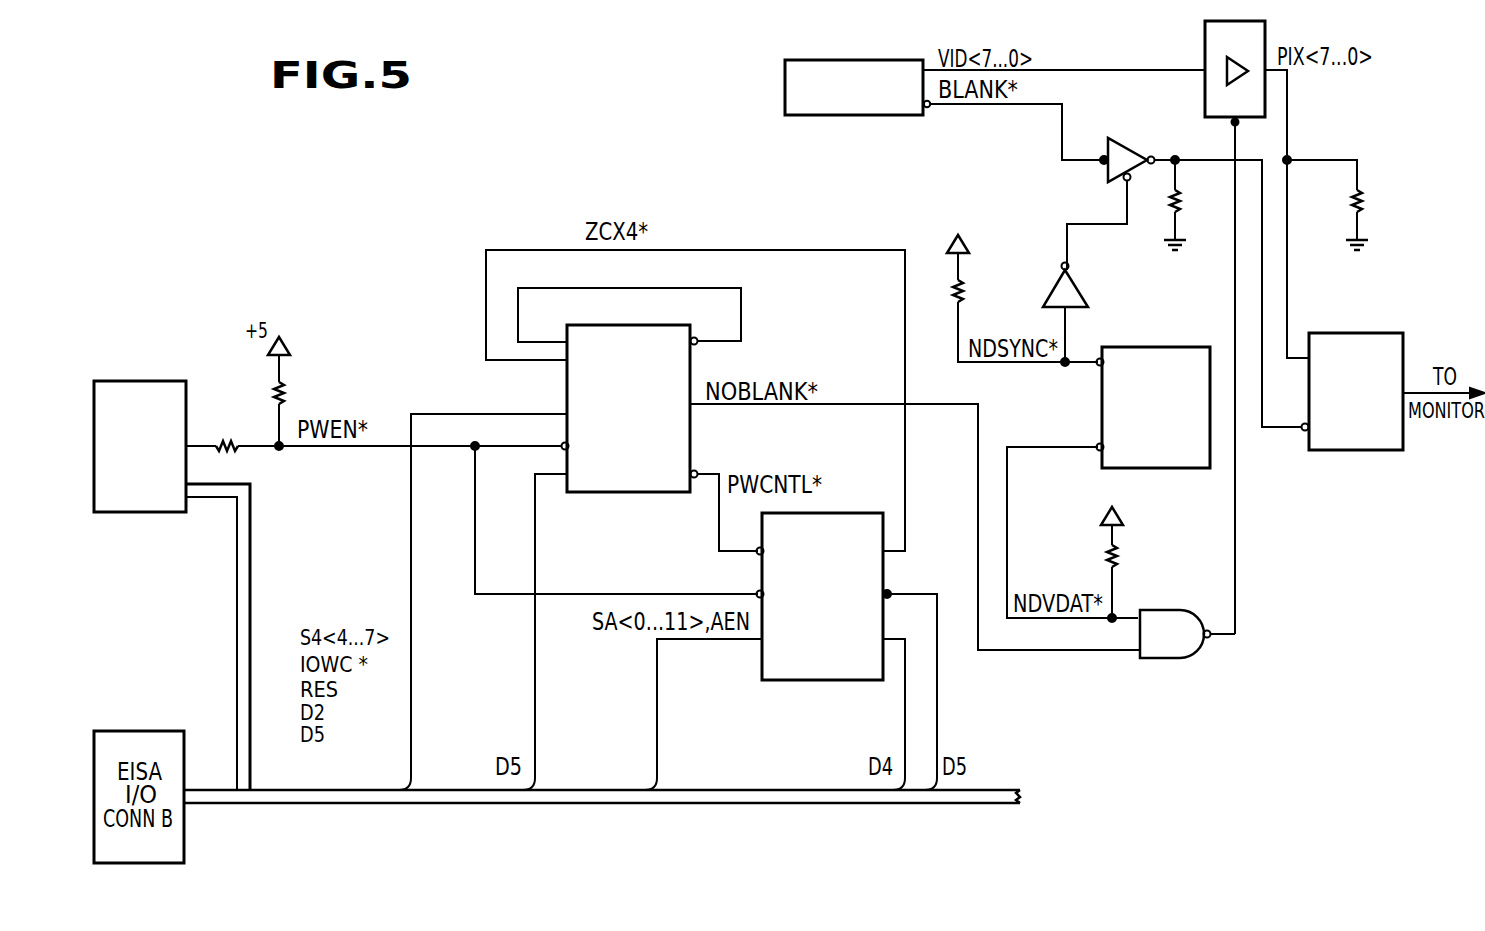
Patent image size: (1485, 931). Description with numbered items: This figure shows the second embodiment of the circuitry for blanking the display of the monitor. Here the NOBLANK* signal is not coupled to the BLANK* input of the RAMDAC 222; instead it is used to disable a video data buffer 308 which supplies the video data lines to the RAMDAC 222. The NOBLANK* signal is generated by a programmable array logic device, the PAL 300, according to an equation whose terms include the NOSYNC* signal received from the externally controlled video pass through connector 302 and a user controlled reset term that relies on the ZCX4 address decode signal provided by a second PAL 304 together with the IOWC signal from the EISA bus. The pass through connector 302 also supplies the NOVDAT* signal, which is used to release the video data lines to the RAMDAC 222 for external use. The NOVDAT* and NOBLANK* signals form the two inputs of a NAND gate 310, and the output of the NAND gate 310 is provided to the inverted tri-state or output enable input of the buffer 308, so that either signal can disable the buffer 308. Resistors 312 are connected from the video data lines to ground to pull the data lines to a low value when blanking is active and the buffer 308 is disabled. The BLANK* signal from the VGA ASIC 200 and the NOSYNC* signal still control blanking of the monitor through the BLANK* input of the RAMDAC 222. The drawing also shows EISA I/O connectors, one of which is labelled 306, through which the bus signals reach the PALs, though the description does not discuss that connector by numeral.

The VGA ASIC 200 is at (785, 86).
The RAMDAC 222 is at (1370, 333).
The PAL 300 is at (608, 492).
The video pass through connector 302 is at (1160, 468).
The PAL 304 is at (790, 680).
The EISA I/O connector A 306 is at (140, 381).
The video data buffer 308 is at (1205, 40).
The NAND gate 310 is at (1180, 658).
The resistors 312 is at (1363, 197).